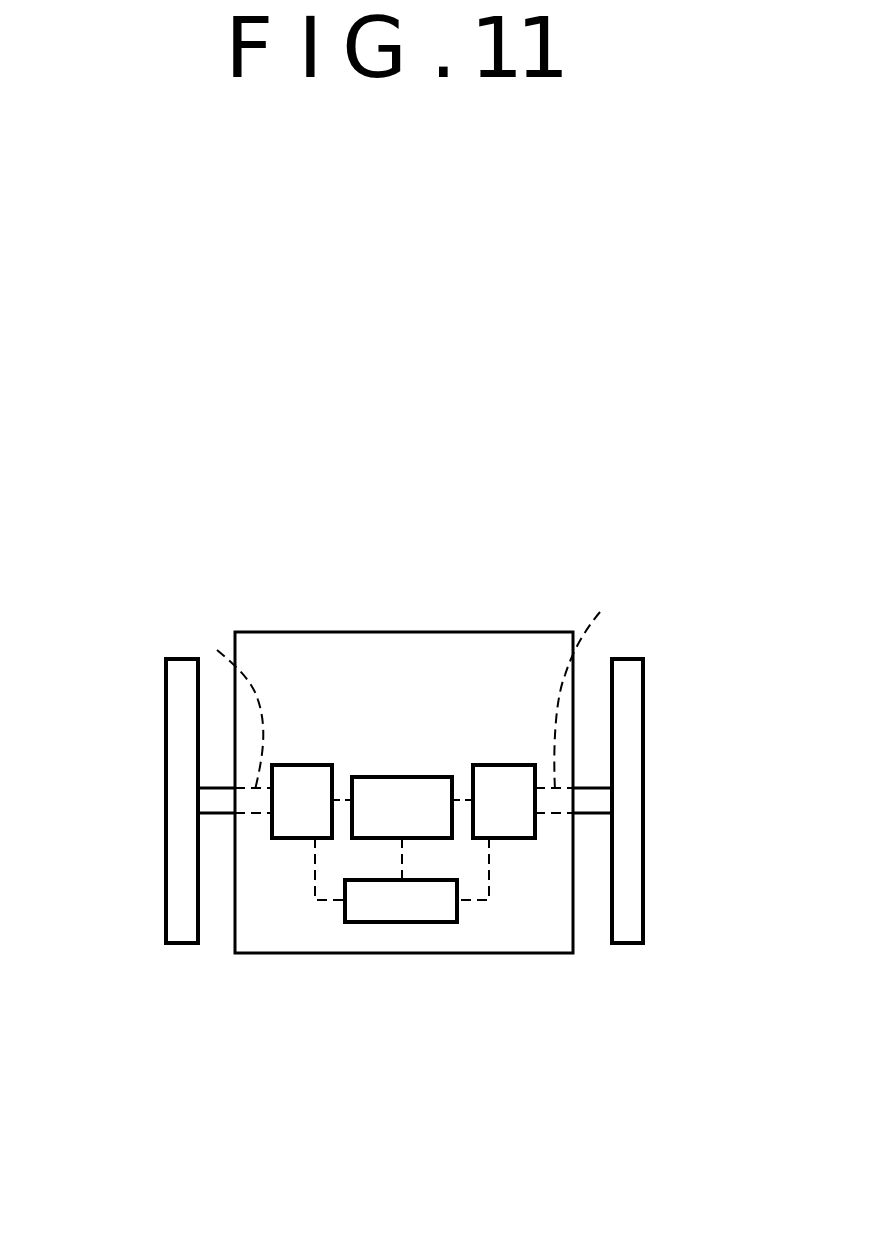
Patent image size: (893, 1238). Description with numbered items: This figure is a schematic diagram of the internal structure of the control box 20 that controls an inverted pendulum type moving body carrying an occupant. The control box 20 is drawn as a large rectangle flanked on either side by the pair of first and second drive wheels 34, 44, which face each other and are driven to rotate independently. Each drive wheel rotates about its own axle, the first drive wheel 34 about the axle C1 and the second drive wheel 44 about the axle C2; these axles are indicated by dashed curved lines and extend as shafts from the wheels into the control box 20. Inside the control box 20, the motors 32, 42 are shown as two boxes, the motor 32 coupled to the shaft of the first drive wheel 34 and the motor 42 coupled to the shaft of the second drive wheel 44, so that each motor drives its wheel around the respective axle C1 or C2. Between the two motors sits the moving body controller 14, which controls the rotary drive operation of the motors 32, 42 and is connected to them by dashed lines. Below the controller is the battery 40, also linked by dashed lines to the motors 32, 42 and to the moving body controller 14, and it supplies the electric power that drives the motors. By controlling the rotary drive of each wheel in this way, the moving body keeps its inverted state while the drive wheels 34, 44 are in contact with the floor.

The control box 20 is at (390, 632).
The first drive wheel 34 is at (166, 738).
The second drive wheel 44 is at (643, 744).
The motor 32 is at (272, 832).
The motor 42 is at (535, 830).
The moving body controller 14 is at (352, 836).
The battery 40 is at (403, 922).
The axle C1 is at (217, 650).
The axle C2 is at (600, 612).